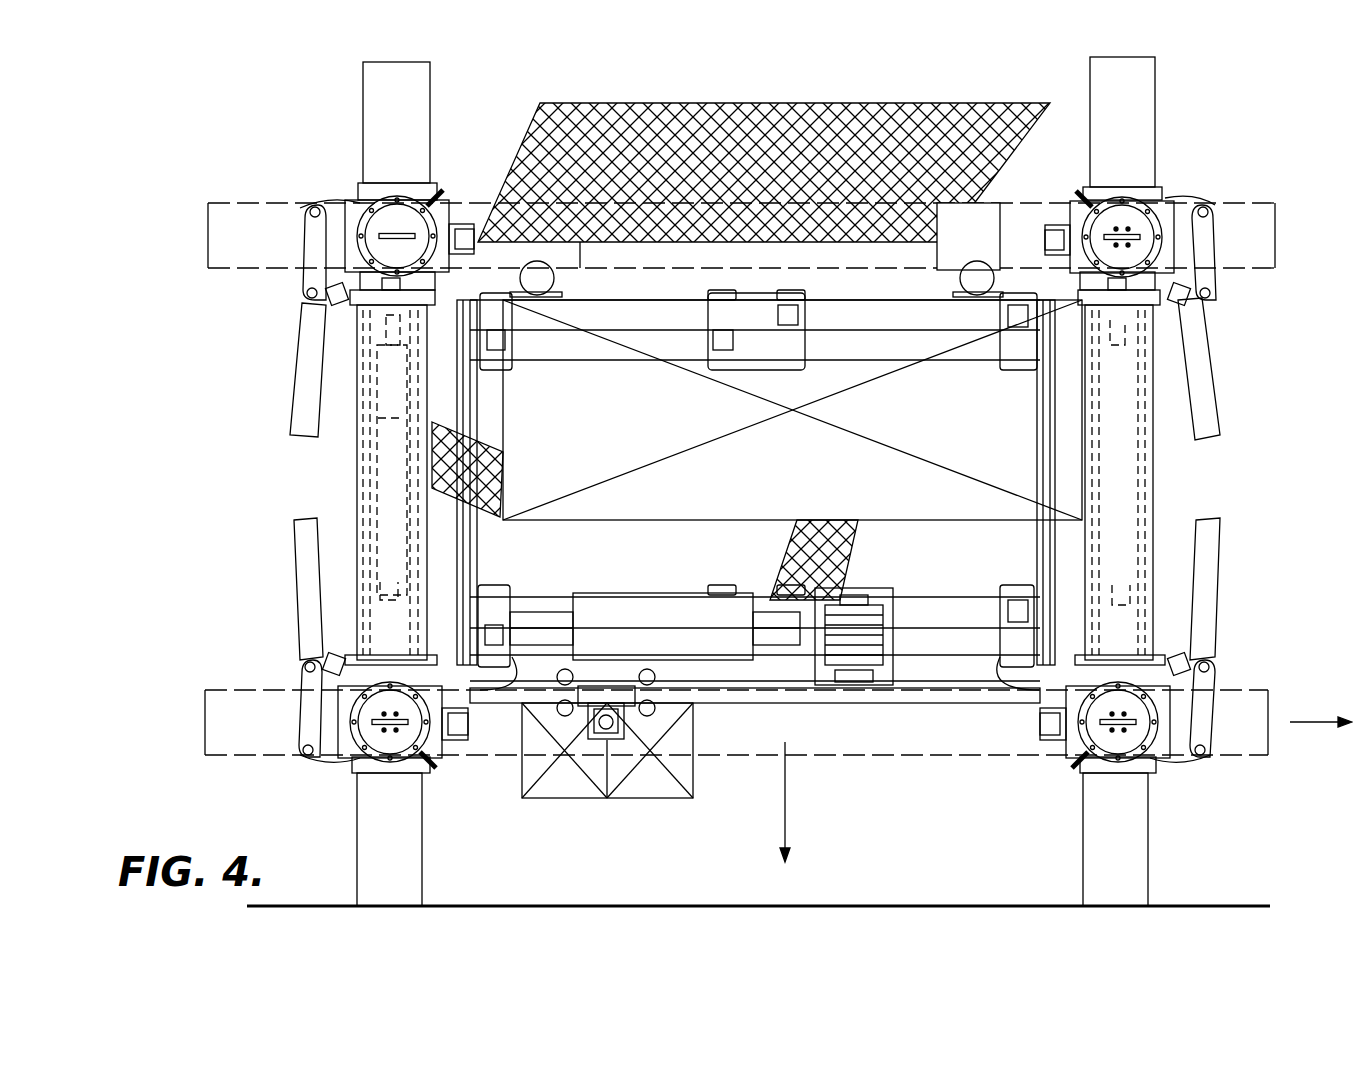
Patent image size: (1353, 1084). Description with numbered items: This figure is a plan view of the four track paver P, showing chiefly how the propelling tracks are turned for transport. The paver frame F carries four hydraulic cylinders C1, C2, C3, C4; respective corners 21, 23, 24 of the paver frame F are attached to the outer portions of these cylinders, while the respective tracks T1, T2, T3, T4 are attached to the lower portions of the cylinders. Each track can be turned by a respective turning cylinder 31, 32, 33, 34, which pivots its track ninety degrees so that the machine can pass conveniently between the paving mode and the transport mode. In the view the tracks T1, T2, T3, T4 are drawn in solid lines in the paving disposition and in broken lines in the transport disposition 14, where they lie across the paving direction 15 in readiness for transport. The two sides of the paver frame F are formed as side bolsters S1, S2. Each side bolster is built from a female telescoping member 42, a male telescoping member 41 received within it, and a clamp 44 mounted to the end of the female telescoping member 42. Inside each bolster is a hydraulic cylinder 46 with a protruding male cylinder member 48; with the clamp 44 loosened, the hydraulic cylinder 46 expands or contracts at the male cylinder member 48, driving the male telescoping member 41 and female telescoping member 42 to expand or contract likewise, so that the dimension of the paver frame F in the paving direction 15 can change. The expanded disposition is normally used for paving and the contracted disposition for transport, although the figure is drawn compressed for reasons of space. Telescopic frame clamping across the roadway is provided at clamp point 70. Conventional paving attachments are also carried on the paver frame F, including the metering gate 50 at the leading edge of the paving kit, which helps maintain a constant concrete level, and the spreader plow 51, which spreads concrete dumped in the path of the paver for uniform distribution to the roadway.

The track T1 is at (357, 855).
The track T2 is at (363, 128).
The track T3 is at (1083, 852).
The track T4 is at (1155, 115).
The hydraulic cylinder C1 is at (420, 768).
The hydraulic cylinder C2 is at (430, 195).
The hydraulic cylinder C3 is at (1165, 765).
The hydraulic cylinder C4 is at (1160, 205).
The corner of paver frame 21 is at (350, 765).
The corner of paver frame 23 is at (1072, 760).
The corner of paver frame 24 is at (1180, 250).
The clamp 44 is at (325, 268).
The turning cylinder 31 is at (298, 605).
The turning cylinder 32 is at (302, 335).
The turning cylinder 33 is at (1215, 603).
The turning cylinder 34 is at (1218, 372).
The male telescoping member 41 is at (390, 493).
The female telescoping member 42 is at (358, 420).
The hydraulic cylinder 46 is at (400, 340).
The male cylinder member 48 is at (378, 600).
The metering gate 50 is at (750, 715).
The spreader plow 51 is at (582, 903).
The clamp point 70 is at (510, 368).
The side bolster S1 is at (357, 452).
The side bolster S2 is at (1153, 505).
The paver frame F is at (642, 590).
The four track paver P is at (1293, 497).
The paving transport disposition 14 is at (1300, 724).
The paving direction 15 is at (786, 798).